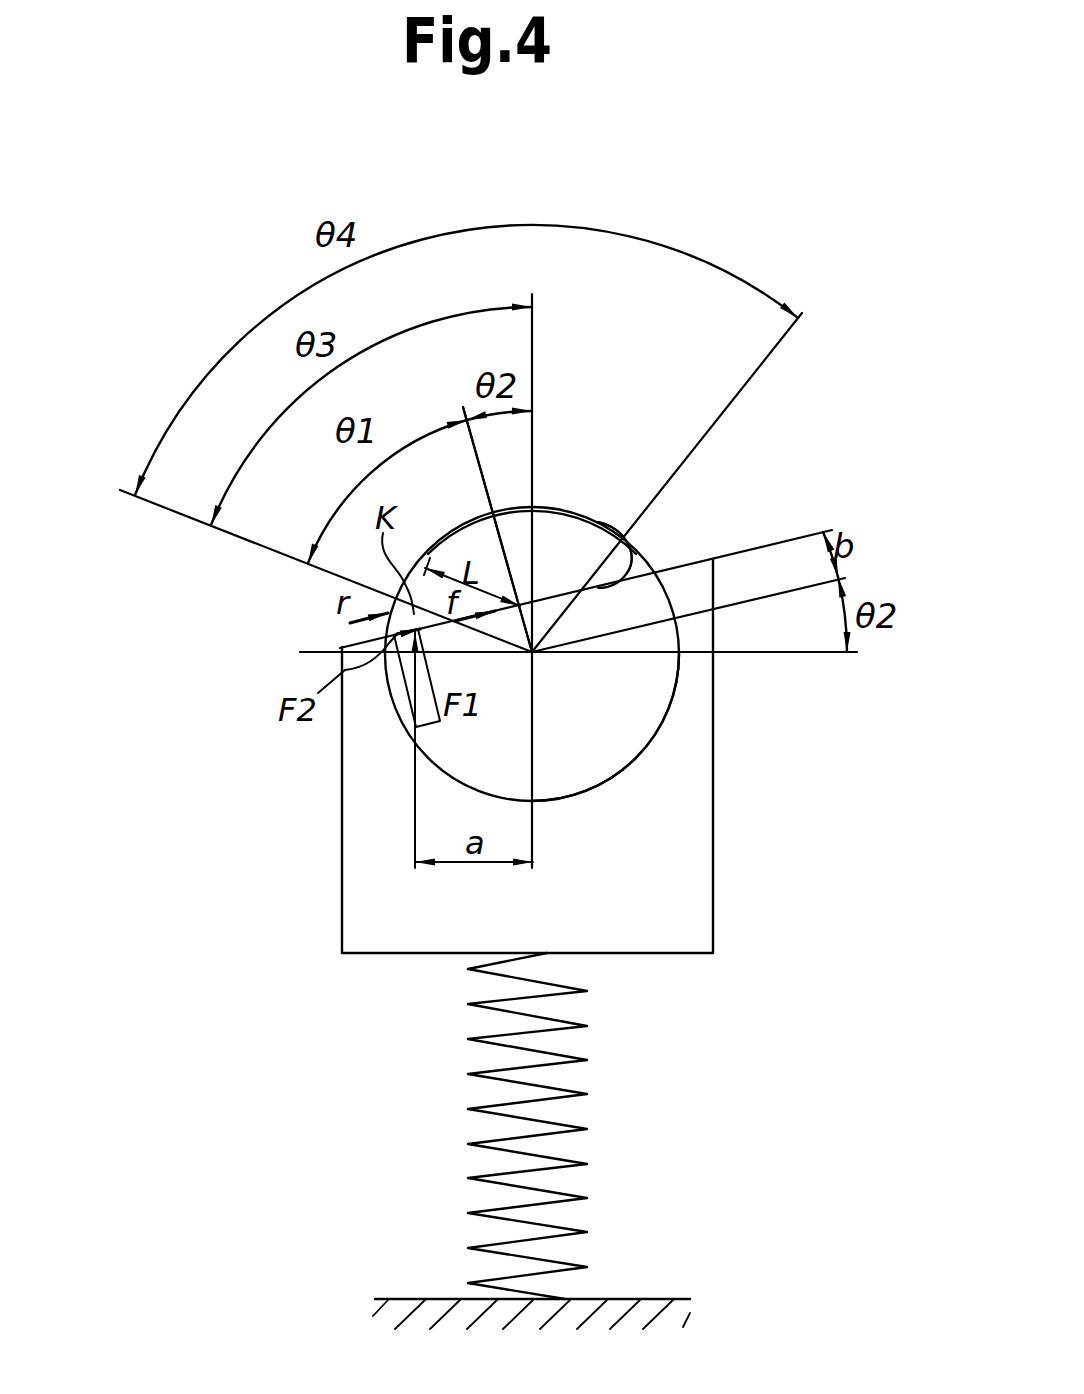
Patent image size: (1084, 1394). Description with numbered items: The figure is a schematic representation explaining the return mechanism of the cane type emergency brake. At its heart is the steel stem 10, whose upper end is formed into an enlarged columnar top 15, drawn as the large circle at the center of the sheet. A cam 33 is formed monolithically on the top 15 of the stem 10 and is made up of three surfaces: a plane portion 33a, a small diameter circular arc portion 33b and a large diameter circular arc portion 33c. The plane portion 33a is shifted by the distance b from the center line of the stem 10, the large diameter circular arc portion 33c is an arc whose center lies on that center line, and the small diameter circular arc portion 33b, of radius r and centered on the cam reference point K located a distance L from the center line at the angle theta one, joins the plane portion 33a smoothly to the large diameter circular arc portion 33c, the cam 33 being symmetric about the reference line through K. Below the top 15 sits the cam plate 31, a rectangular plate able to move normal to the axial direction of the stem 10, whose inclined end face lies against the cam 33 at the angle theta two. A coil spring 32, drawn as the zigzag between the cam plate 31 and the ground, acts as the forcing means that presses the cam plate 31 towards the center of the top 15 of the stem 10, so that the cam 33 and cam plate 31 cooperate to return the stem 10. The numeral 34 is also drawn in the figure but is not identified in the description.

The stem 10 is at (618, 630).
The columnar top 15 is at (674, 690).
The cam plate 31 is at (645, 918).
The coil spring 32 is at (593, 1094).
The cam 33 is at (580, 545).
The plane portion 33a is at (595, 587).
The small diameter circular arc portion 33b is at (633, 557).
The large diameter circular arc portion 33c is at (550, 507).
The detent member 34 is at (552, 593).